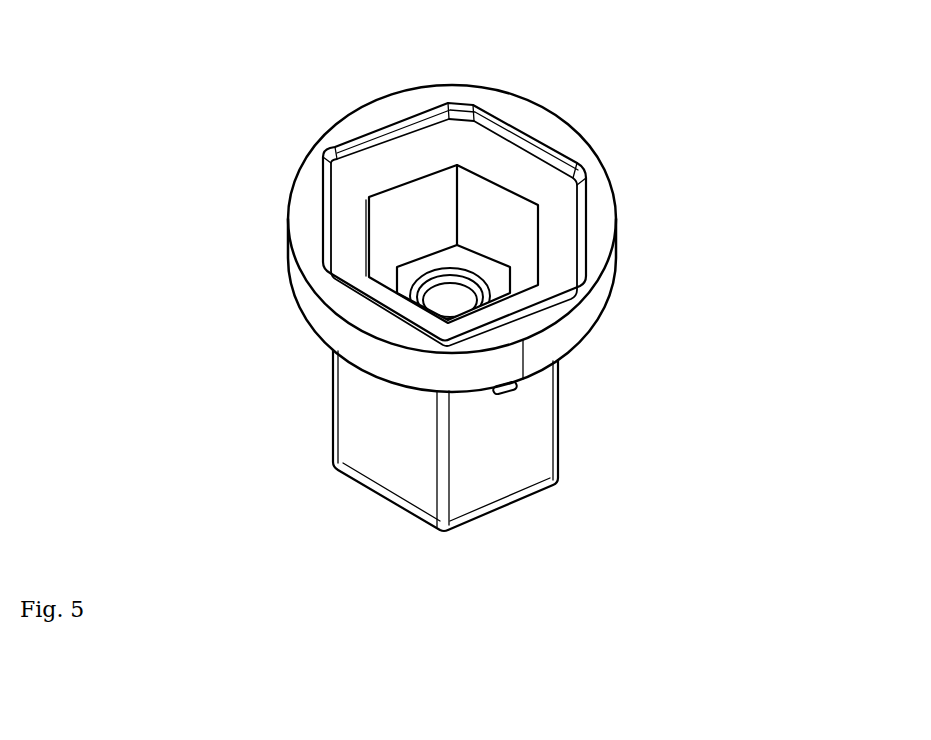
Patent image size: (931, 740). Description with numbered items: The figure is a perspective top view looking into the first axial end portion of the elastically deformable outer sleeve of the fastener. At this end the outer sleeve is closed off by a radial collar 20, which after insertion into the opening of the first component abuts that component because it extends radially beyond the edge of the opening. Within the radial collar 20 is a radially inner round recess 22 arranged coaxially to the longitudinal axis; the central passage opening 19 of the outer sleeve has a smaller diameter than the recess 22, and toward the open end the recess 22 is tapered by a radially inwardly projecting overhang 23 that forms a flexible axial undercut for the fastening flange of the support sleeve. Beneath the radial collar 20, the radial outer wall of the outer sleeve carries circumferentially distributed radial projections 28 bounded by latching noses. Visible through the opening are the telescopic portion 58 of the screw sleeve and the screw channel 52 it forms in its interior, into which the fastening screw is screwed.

The central passage opening 19 is at (487, 215).
The radial collar 20 is at (603, 293).
The recess 22 is at (558, 213).
The overhang 23 is at (327, 212).
The radial projections 28 is at (513, 390).
The screw channel 52 is at (443, 300).
The telescopic portion 58 is at (471, 268).